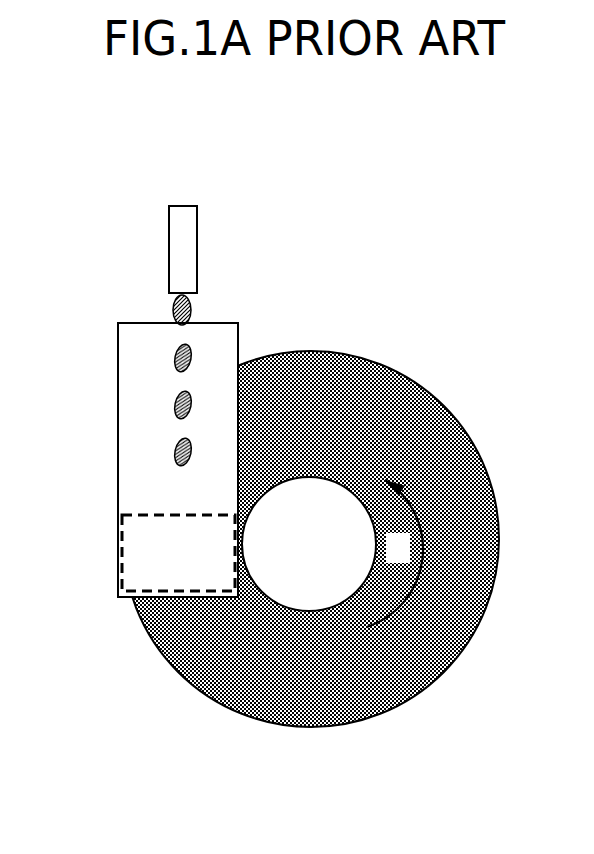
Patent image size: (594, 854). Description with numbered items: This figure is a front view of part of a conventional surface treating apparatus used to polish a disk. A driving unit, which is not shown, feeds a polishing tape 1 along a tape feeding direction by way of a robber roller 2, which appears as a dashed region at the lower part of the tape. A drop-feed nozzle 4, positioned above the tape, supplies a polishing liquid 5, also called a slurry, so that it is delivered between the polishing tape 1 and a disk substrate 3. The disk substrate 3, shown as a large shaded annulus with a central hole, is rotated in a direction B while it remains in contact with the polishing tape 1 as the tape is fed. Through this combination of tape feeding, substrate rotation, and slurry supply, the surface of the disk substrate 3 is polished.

The polishing tape 1 is at (145, 365).
The robber roller 2 is at (140, 540).
The disk substrate 3 is at (403, 442).
The drop-feed nozzle 4 is at (188, 238).
The polishing liquid 5 is at (192, 300).
The direction of rotation of the disk substrate B is at (395, 553).